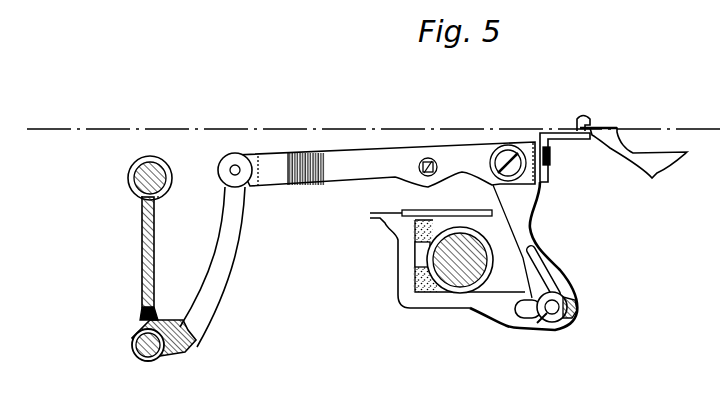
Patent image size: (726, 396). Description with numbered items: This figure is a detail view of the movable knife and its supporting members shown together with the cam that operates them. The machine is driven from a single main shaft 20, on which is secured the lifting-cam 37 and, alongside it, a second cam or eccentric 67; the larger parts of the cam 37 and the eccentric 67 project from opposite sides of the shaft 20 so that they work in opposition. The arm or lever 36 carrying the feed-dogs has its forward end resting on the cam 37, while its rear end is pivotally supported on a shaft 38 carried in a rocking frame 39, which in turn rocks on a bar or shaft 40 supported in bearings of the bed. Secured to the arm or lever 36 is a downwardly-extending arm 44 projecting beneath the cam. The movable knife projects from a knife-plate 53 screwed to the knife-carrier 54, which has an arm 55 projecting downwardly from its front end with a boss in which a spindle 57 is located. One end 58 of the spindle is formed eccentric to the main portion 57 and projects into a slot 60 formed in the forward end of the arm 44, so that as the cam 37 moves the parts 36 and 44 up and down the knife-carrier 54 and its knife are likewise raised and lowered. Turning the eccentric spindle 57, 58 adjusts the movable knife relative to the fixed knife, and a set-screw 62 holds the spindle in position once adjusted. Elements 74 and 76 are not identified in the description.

The main shaft 20 is at (495, 262).
The arm or lever 36 is at (375, 214).
The lifting-cam 37 is at (467, 227).
The shaft 38 is at (140, 186).
The rocking frame 39 is at (142, 260).
The bar or shaft 40 is at (131, 353).
The downwardly-extending arm 44 is at (448, 302).
The knife-plate 53 is at (563, 147).
The knife-carrier 54 is at (452, 157).
The arm 55 is at (527, 239).
The spindle 57 is at (570, 318).
The eccentric end of spindle 58 is at (573, 295).
The slot 60 is at (530, 313).
The set-screw 62 is at (579, 310).
The cam or eccentric 67 is at (546, 323).
The blade 74 is at (620, 131).
The hook 76 is at (583, 118).